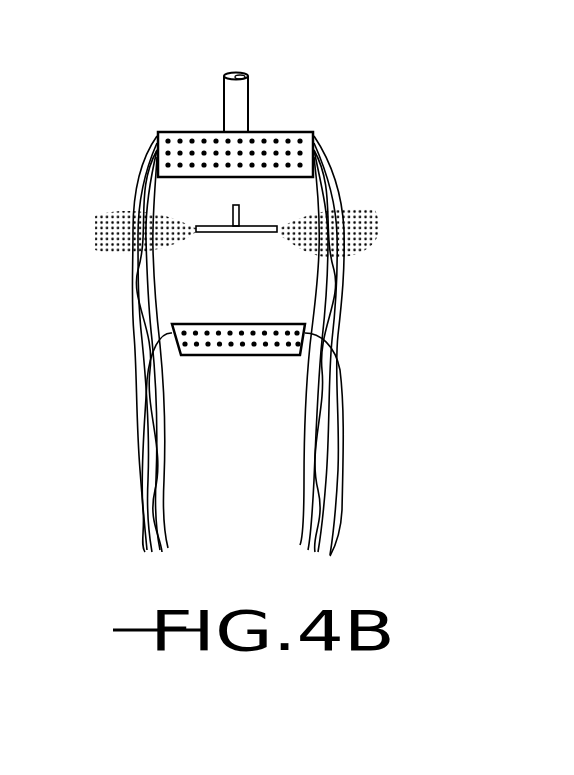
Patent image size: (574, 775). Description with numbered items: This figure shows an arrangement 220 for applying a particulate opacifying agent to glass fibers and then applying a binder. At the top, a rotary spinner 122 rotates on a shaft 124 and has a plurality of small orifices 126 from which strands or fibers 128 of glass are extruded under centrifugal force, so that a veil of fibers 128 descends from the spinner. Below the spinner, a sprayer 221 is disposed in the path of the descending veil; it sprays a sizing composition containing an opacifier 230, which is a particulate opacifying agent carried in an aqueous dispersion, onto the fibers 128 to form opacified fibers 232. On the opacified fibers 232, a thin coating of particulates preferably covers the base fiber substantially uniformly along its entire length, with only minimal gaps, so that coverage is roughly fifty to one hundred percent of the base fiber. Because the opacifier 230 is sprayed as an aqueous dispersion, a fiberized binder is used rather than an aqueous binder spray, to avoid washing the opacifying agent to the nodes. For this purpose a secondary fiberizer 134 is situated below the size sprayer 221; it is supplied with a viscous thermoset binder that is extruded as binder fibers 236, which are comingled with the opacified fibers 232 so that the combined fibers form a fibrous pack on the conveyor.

The rotary spinner 122 is at (322, 128).
The shaft 124 is at (240, 92).
The small orifices 126 is at (180, 140).
The fibers 128 is at (150, 188).
The lower plate 134 is at (255, 360).
The brush assembly 220 is at (362, 186).
The sprayer 221 is at (250, 238).
The opacifier 230 is at (168, 243).
The opacified fibers 232 is at (143, 318).
The binder fibers 236 is at (318, 365).